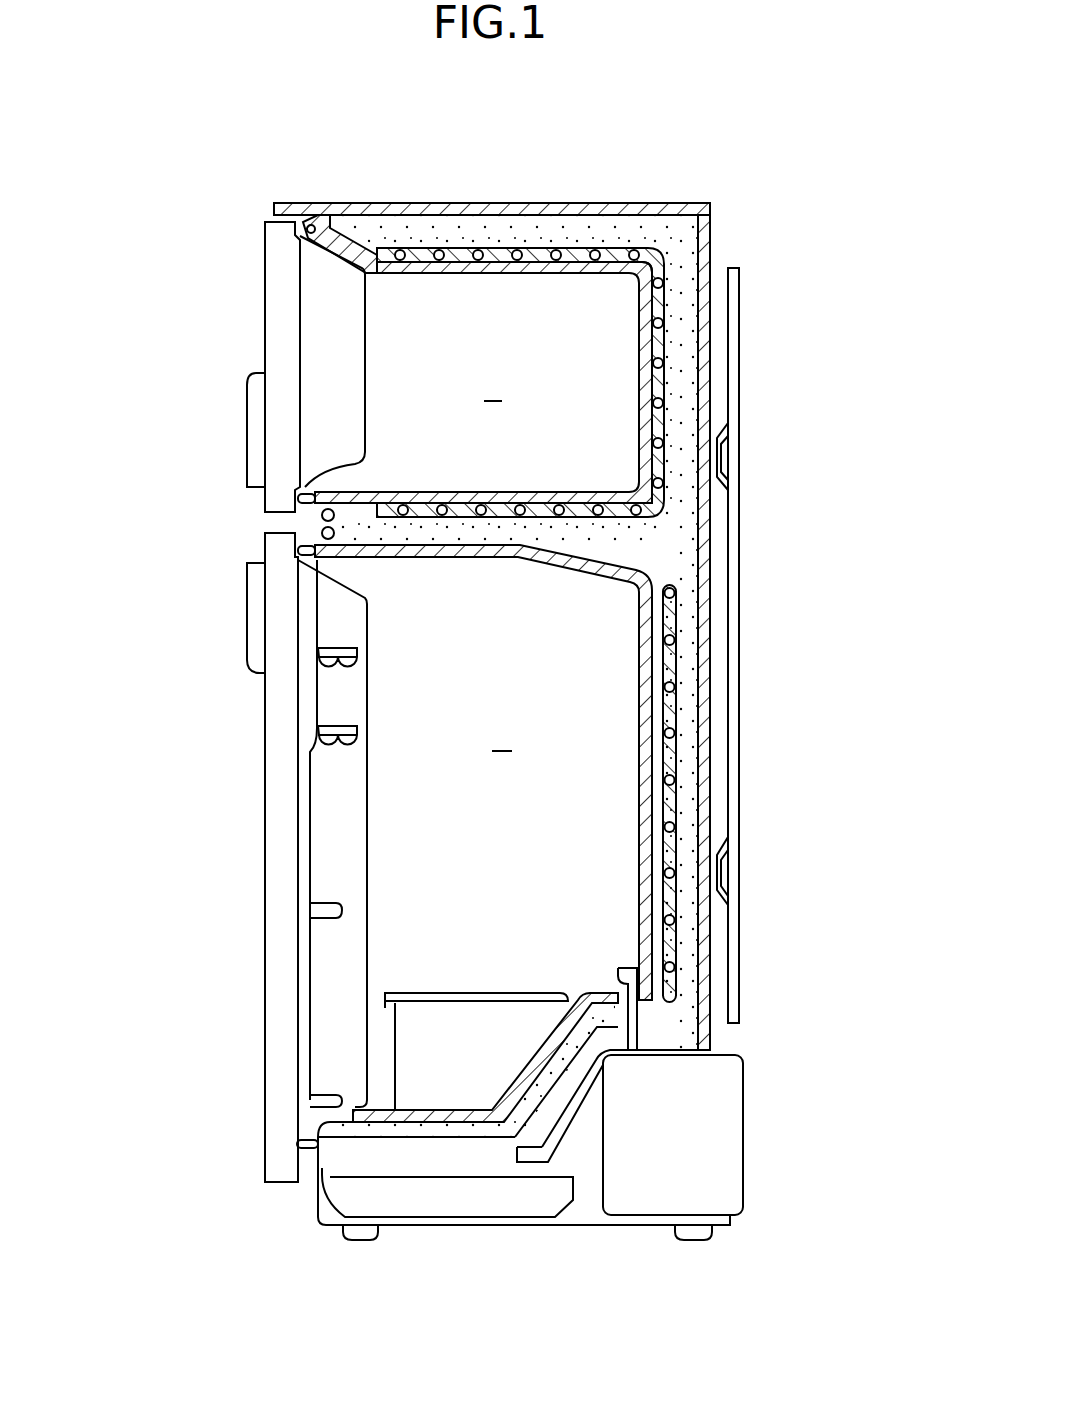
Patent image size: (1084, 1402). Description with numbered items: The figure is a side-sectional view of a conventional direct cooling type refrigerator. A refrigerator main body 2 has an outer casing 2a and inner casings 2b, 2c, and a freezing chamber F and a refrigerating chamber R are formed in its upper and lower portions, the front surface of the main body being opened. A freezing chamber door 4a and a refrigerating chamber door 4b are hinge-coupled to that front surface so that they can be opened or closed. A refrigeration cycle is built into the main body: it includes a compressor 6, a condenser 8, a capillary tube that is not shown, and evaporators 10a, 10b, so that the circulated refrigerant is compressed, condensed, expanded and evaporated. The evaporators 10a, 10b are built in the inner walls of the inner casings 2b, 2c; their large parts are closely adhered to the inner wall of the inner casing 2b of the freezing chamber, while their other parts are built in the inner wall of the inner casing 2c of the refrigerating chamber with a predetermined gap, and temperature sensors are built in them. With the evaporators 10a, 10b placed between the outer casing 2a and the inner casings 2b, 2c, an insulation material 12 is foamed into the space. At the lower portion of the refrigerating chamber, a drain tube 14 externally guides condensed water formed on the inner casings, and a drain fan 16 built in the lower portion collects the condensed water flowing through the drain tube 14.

The refrigerator main body 2 is at (714, 214).
The outer casing 2a is at (703, 342).
The inner casing 2b is at (646, 492).
The inner casing 2c is at (645, 667).
The freezing chamber door 4a is at (272, 345).
The refrigerating chamber door 4b is at (275, 735).
The compressor 6 is at (740, 1137).
The condenser 8 is at (739, 915).
The evaporator 10a is at (660, 412).
The evaporator 10b is at (668, 803).
The insulation material 12 is at (513, 240).
The drain tube 14 is at (650, 1022).
The drain fan 16 is at (487, 1205).